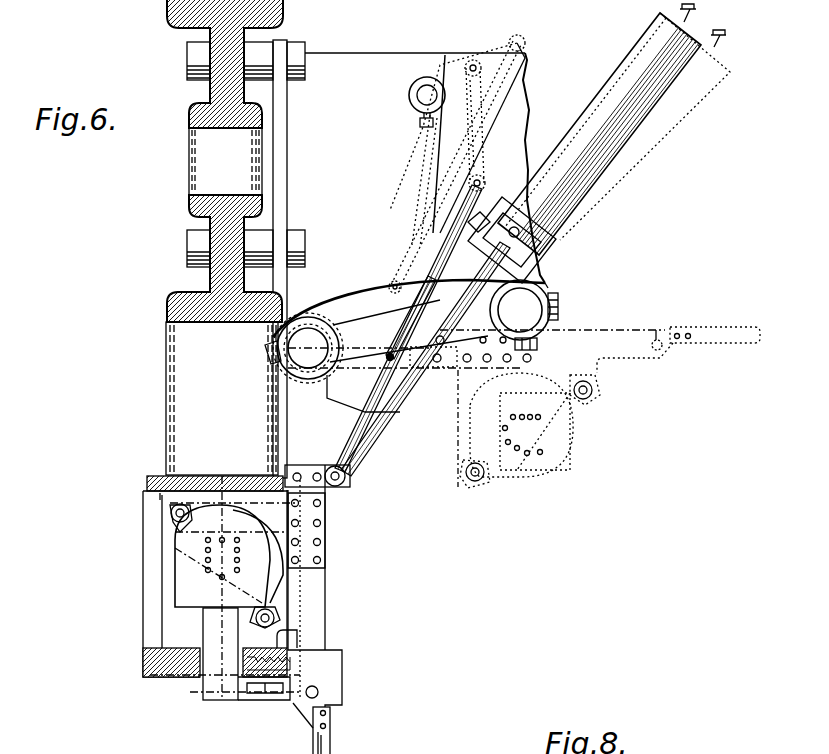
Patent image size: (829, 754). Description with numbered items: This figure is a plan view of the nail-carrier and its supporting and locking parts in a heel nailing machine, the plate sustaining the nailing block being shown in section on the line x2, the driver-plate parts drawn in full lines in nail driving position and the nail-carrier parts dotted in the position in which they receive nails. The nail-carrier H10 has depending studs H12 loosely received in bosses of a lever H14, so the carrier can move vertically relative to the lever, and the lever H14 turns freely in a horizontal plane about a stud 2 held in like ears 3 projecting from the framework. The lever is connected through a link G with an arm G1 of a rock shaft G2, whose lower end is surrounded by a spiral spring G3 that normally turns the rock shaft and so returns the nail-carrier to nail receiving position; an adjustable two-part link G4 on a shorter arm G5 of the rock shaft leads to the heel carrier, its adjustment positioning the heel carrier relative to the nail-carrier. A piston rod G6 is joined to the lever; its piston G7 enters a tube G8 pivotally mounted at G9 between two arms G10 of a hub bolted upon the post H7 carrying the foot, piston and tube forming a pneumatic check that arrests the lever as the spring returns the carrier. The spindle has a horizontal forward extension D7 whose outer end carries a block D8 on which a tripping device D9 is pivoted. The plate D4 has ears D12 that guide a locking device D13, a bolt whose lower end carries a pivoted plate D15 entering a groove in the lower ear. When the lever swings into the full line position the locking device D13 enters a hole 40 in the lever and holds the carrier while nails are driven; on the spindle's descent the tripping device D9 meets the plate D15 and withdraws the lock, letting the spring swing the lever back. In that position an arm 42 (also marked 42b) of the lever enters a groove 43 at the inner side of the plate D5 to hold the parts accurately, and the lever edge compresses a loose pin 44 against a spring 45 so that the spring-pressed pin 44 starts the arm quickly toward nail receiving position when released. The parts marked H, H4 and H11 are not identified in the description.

The column H is at (210, 95).
The plate D5 is at (153, 476).
The ears 3 is at (273, 337).
The stud 2 is at (308, 336).
The spiral spring G3 is at (347, 474).
The piston rod G6 is at (445, 276).
The adjustable two-part link G4 is at (390, 356).
The link G is at (405, 238).
The shorter arm G5 is at (455, 58).
The rock shaft G2 is at (425, 96).
The arm G1 is at (524, 98).
The cord H4 is at (523, 142).
The tube G8 is at (604, 92).
The pivot G9 is at (542, 277).
The piston G7 is at (560, 240).
The arms G10 is at (560, 283).
The post H7 is at (550, 314).
The plate H11 is at (470, 371).
The arm 42 is at (458, 438).
The nail-carrier H10 is at (180, 577).
The studs H12 is at (172, 517).
The groove 43 is at (160, 497).
The guard 42b is at (178, 506).
The plate D4 is at (143, 663).
The horizontal forward extension D7 is at (207, 633).
The section line x2 is at (249, 701).
The spring 45 is at (258, 655).
The loose pin 44 is at (297, 639).
The block D8 is at (257, 700).
The tripping device D9 is at (277, 693).
The plate D15 is at (305, 728).
The lever H14 is at (326, 598).
The hole 40 is at (652, 330).
The ears D12 is at (330, 650).
The locking device D13 is at (318, 688).